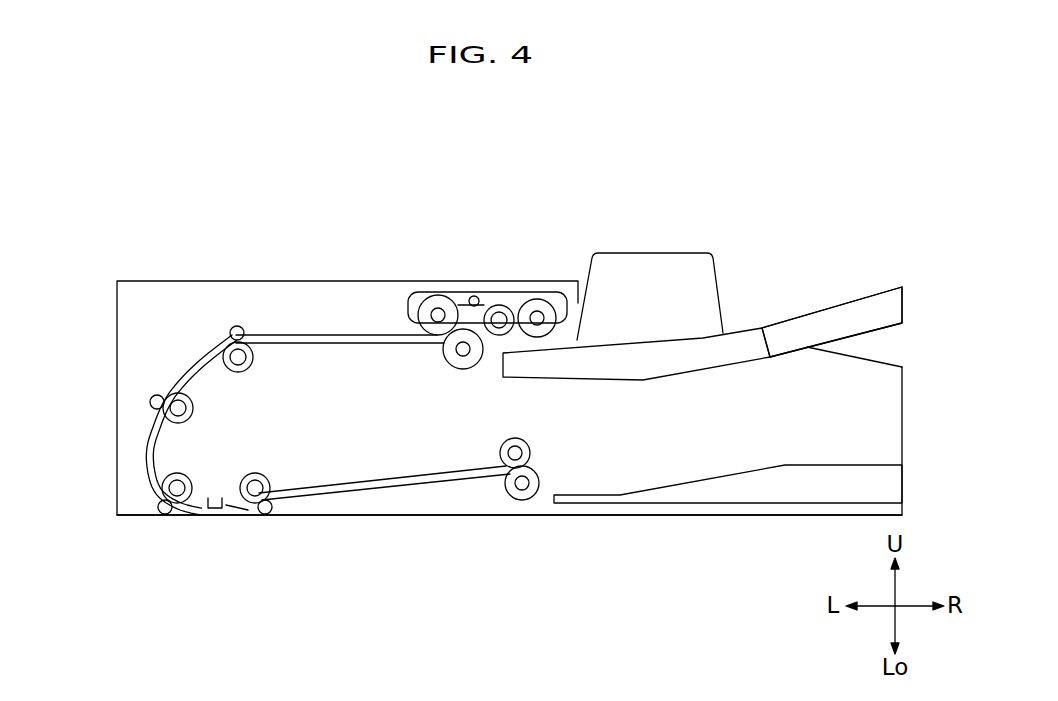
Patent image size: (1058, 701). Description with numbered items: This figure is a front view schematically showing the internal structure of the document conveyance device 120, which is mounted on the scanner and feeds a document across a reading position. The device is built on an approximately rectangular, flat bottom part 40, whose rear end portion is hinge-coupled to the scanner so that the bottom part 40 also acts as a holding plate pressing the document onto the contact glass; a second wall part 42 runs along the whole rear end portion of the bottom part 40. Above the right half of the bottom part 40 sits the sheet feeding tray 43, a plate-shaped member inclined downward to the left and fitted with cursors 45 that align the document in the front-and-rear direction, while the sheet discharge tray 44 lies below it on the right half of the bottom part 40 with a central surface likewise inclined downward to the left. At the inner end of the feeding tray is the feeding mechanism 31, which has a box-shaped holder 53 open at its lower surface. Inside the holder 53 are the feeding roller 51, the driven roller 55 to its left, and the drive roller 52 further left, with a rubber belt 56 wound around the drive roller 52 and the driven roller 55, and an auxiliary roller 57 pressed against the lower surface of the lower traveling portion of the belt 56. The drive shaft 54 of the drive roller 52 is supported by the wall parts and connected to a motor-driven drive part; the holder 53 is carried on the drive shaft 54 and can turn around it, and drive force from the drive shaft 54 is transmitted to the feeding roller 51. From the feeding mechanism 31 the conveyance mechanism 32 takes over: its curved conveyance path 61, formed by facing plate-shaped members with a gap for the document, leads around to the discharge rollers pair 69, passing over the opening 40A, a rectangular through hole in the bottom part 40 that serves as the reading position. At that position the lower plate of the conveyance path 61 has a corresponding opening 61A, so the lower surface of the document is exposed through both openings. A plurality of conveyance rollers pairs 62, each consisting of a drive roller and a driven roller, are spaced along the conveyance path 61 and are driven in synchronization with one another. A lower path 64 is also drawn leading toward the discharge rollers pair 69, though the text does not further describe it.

The document conveyance device 120 is at (893, 163).
The feeding mechanism 31 is at (476, 245).
The conveyance mechanism 32 is at (183, 328).
The bottom part 40 is at (473, 515).
The opening 40A is at (195, 517).
The second wall part 42 is at (895, 365).
The sheet feeding tray 43 is at (810, 310).
The sheet discharge tray 44 is at (790, 465).
The cursors 45 is at (677, 253).
The feeding roller 51 is at (546, 293).
The drive roller 52 is at (426, 299).
The holder 53 is at (468, 297).
The drive shaft 54 is at (430, 307).
The driven roller 55 is at (516, 300).
The belt 56 is at (489, 300).
The auxiliary roller 57 is at (446, 349).
The conveyance path 61 is at (305, 334).
The opening 61A is at (228, 517).
The conveyance rollers pair 62 is at (233, 326).
The feed path 64 is at (377, 493).
The discharge rollers pair 69 is at (530, 503).